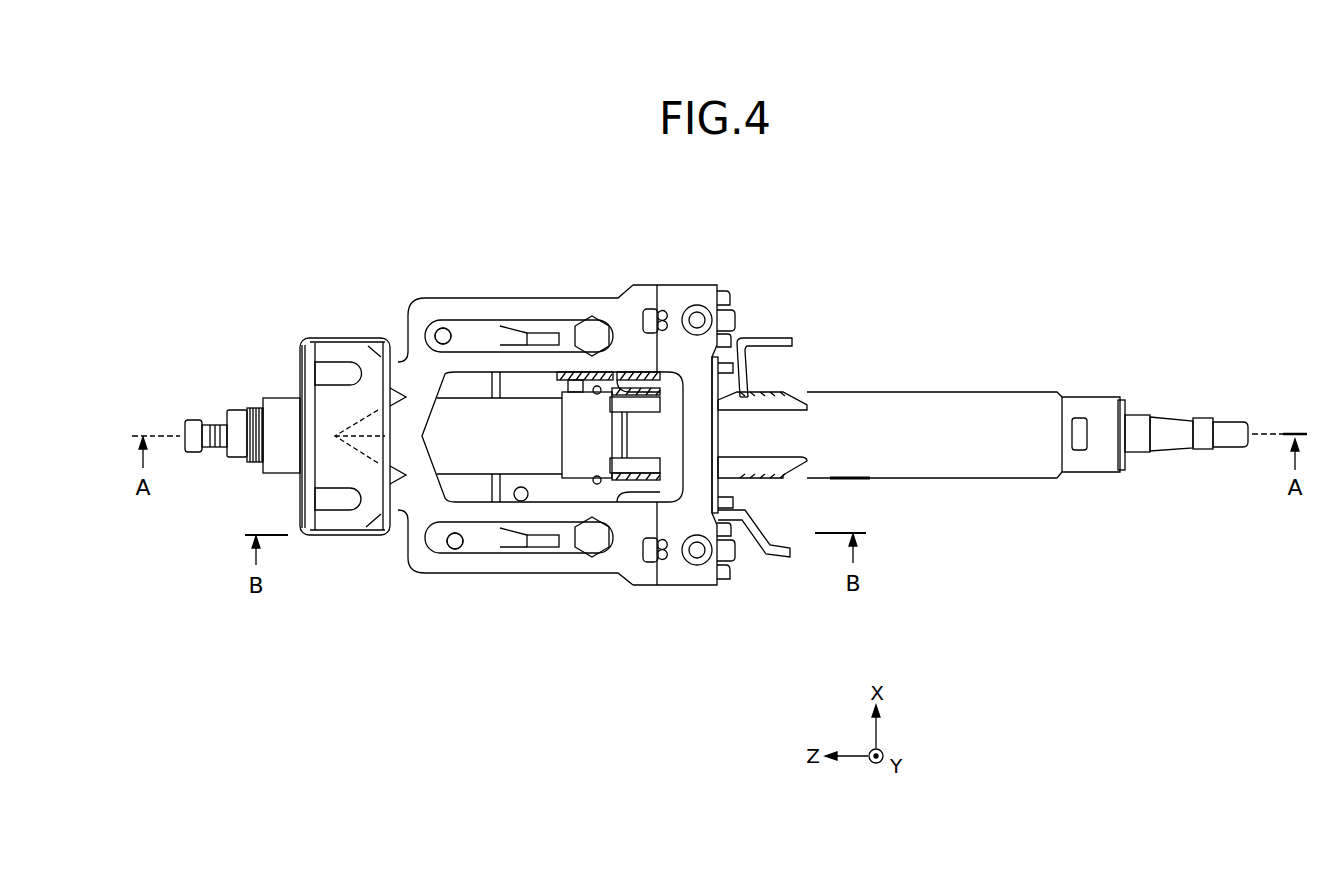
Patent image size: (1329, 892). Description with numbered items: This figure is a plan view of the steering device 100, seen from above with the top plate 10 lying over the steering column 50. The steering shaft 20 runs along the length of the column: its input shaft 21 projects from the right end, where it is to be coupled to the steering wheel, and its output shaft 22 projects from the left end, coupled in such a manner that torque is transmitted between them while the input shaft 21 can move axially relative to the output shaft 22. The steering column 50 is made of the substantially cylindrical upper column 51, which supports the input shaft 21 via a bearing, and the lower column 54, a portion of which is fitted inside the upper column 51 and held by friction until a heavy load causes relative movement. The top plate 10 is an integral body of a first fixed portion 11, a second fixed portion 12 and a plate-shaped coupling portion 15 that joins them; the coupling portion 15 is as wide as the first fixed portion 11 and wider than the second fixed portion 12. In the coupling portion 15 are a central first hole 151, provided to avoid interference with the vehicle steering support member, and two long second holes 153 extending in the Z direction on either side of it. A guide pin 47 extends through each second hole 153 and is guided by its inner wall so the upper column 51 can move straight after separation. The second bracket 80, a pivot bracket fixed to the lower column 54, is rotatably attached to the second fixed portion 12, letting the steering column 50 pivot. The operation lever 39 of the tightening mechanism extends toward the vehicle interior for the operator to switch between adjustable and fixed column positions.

The steering device 100 is at (853, 283).
The top plate 10 is at (581, 278).
The first fixed portion 11 is at (688, 292).
The second fixed portion 12 is at (352, 340).
The coupling portion 15 is at (532, 308).
The steering shaft 20 is at (1179, 465).
The input shaft 21 is at (1178, 420).
The output shaft 22 is at (210, 420).
The operation lever 39 is at (740, 522).
The guide pin 47 is at (593, 330).
The steering column 50 is at (954, 352).
The upper column 51 is at (1004, 408).
The lower column 54 is at (476, 425).
The second bracket 80 is at (300, 505).
The first hole 151 is at (524, 500).
The second hole 153 is at (440, 332).